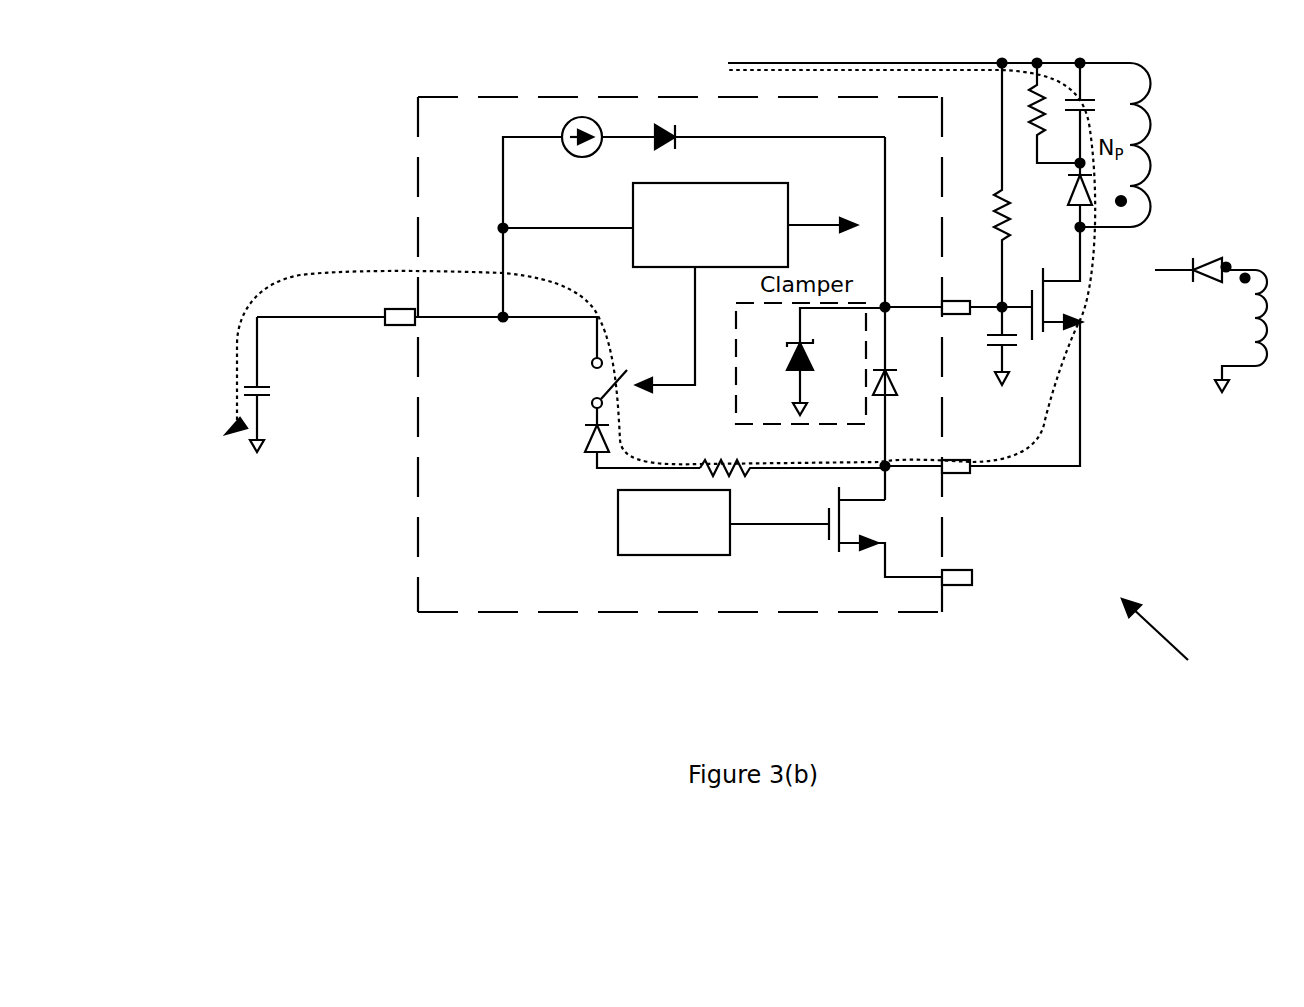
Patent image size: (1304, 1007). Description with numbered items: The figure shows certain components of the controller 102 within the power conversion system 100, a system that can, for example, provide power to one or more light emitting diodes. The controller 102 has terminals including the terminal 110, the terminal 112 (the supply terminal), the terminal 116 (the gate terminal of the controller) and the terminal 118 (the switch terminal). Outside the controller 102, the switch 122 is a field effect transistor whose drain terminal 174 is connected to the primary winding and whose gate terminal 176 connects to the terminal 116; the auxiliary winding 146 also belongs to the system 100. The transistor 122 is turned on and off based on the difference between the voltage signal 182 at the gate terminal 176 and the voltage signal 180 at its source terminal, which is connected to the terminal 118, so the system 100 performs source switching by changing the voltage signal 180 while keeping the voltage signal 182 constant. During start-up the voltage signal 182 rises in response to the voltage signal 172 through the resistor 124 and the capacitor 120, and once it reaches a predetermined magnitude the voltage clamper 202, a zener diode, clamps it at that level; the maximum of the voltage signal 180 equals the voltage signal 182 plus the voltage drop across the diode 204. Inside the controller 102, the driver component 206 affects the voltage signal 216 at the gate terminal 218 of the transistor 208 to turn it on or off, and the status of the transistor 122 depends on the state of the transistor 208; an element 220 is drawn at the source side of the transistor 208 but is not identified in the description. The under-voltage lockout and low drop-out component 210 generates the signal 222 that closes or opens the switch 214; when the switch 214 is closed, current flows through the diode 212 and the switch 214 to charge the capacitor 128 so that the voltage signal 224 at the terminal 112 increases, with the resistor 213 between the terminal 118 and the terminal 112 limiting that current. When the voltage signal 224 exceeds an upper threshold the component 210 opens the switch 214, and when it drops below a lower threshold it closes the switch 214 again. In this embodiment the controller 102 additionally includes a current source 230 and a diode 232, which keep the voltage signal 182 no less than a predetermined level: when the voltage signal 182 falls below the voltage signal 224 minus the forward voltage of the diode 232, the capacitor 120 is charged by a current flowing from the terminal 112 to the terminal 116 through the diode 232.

The power conversion system 100 is at (1166, 645).
The controller 102 is at (424, 612).
The terminal 110 is at (963, 570).
The terminal VDD 112 is at (392, 325).
The terminal GATE 116 is at (935, 300).
The terminal SW 118 is at (962, 475).
The capacitor 120 is at (1006, 372).
The switch 122 is at (1084, 326).
The resistor 124 is at (1000, 202).
The capacitor 128 is at (262, 398).
The auxiliary winding 146 is at (1250, 268).
The voltage signal 172 is at (958, 63).
The drain terminal 174 is at (1082, 398).
The gate terminal 176 is at (1015, 340).
The voltage signal 180 is at (1078, 470).
The voltage signal 182 is at (1027, 300).
The voltage clamper 202 is at (795, 345).
The diode 204 is at (897, 396).
The driver component 206 is at (620, 556).
The transistor 208 is at (840, 552).
The UVLO & LDO component 210 is at (718, 183).
The diode 212 is at (587, 455).
The resistor 213 is at (736, 474).
The switch 214 is at (592, 400).
The voltage signal 216 is at (766, 527).
The gate terminal 218 is at (829, 518).
The source of M2 220 is at (905, 577).
The signal 222 is at (695, 292).
The voltage signal 224 is at (420, 317).
The current source 230 is at (583, 117).
The diode 232 is at (665, 127).